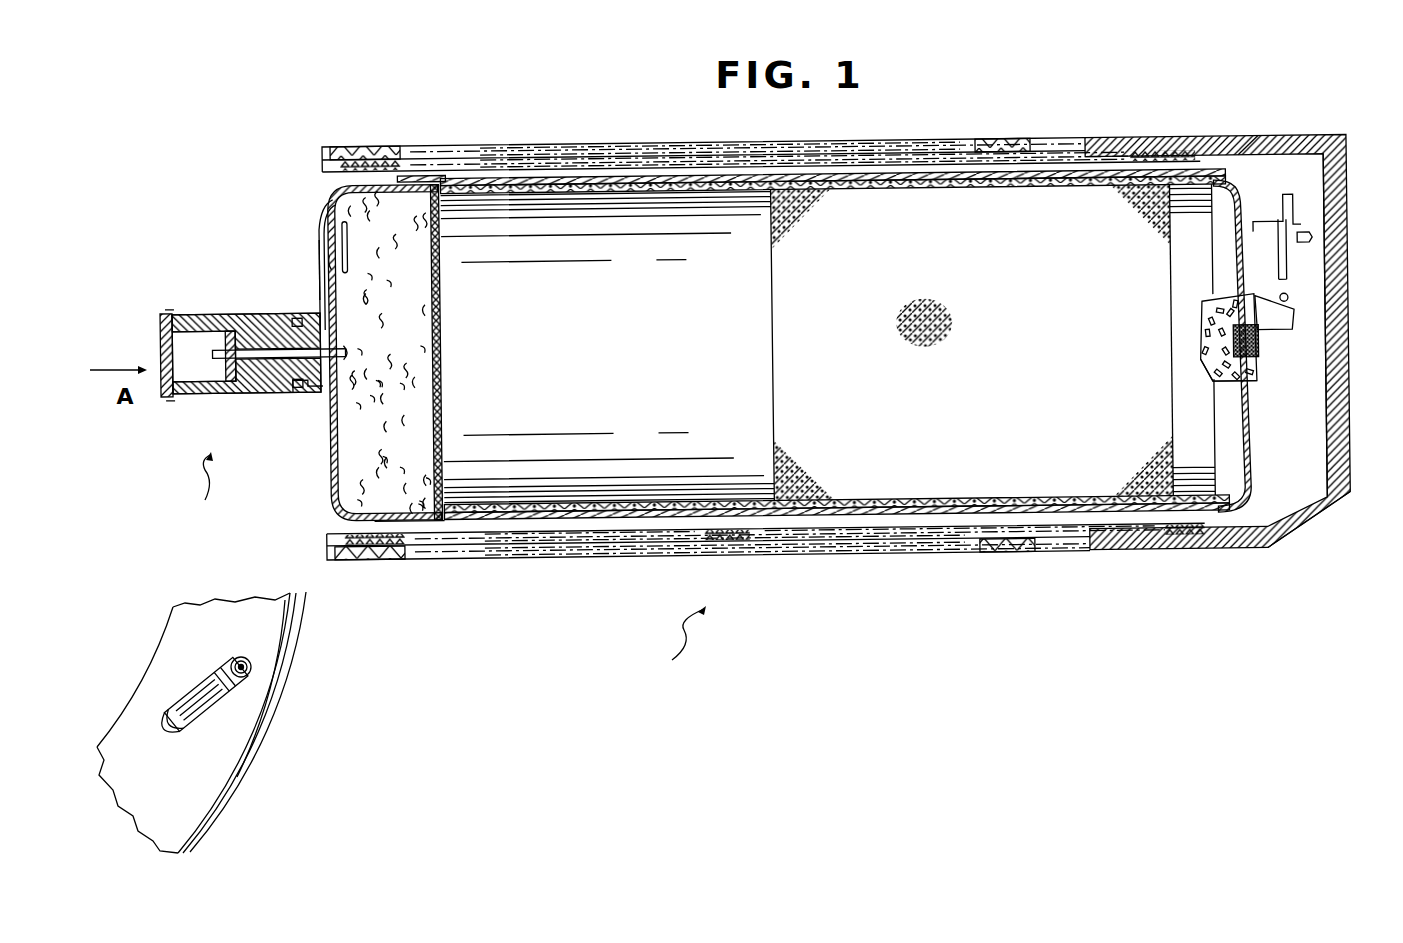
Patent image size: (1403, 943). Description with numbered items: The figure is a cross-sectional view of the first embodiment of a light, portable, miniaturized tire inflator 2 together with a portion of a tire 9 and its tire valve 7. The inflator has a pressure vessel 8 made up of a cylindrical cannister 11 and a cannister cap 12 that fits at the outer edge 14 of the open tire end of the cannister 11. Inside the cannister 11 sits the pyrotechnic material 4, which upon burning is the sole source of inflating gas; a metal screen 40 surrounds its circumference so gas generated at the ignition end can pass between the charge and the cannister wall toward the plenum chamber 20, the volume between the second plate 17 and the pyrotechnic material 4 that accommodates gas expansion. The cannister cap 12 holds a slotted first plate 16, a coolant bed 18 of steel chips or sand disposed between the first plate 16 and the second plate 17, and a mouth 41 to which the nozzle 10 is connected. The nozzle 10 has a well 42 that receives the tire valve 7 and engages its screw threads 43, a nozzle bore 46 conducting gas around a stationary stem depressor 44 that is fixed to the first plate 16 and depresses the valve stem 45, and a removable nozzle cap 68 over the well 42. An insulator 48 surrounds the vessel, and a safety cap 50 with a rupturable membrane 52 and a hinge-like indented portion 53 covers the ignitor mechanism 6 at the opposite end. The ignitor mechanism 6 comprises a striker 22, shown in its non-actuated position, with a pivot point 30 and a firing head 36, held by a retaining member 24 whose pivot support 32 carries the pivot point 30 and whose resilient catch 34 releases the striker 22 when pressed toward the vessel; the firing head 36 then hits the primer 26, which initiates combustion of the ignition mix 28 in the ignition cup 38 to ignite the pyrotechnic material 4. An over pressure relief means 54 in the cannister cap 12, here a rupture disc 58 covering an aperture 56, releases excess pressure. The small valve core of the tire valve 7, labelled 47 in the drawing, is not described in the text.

The tire inflator 2 is at (684, 647).
The pyrotechnic material 4 is at (977, 326).
The ignitor mechanism 6 is at (1291, 168).
The tire valve 7 is at (186, 729).
The pressure vessel 8 is at (548, 107).
The tire 9 is at (260, 760).
The nozzle 10 is at (203, 491).
The cannister 11 is at (630, 176).
The cannister cap 12 is at (331, 193).
The outer edge 14 is at (400, 526).
The first plate 16 is at (347, 238).
The second plate 17 is at (430, 352).
The coolant bed 18 is at (372, 441).
The plenum chamber 20 is at (578, 365).
The striker 22 is at (1287, 266).
The retaining member 24 is at (1252, 217).
The primer 26 is at (1257, 346).
The ignition mix 28 is at (1203, 334).
The pivot point 30 is at (1288, 311).
The pivot support 32 is at (1262, 302).
The catch 34 is at (1295, 222).
The firing head 36 is at (1311, 248).
The ignition cup 38 is at (1203, 362).
The metal screen 40 is at (880, 185).
The mouth 41 is at (315, 395).
The well 42 is at (183, 336).
The screw threads 43 is at (236, 690).
The stem depressor 44 is at (216, 360).
The valve stem 45 is at (252, 667).
The nozzle bore 46 is at (275, 350).
The valve core 47 is at (238, 659).
The insulator 48 is at (340, 147).
The safety cap 50 is at (1076, 143).
The membrane 52 is at (1293, 537).
The indented portion 53 is at (1240, 140).
The over pressure relief means 54 is at (306, 251).
The aperture 56 is at (319, 243).
The rupture disc 58 is at (331, 263).
The nozzle cap 68 is at (158, 330).